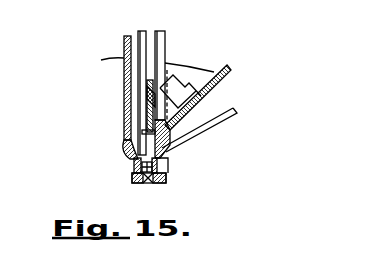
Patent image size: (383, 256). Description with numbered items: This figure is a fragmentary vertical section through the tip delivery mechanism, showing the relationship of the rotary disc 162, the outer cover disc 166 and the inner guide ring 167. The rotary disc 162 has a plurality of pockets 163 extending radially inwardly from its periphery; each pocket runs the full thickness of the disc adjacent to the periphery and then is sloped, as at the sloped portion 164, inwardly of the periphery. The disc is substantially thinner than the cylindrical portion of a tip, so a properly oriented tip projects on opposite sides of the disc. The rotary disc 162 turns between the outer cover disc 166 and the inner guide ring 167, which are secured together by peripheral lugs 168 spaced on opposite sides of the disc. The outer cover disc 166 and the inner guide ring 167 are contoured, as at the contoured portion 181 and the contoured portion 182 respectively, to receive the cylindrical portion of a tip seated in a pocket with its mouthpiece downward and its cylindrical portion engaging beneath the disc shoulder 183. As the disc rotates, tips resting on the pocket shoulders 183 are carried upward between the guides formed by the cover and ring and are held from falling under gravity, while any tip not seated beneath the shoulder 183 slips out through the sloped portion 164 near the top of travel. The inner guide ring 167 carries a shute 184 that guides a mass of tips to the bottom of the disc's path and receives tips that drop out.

The rotary disc 162 is at (153, 90).
The pockets 163 is at (150, 128).
The sloped portion 164 is at (150, 110).
The outer cover disc 166 is at (123, 54).
The inner guide ring 167 is at (220, 100).
The peripheral lugs 168 is at (137, 165).
The contoured portion of cover disc 181 is at (124, 150).
The contoured portion of guide ring 182 is at (163, 150).
The disc shoulder 183 is at (142, 133).
The shute 184 is at (214, 73).